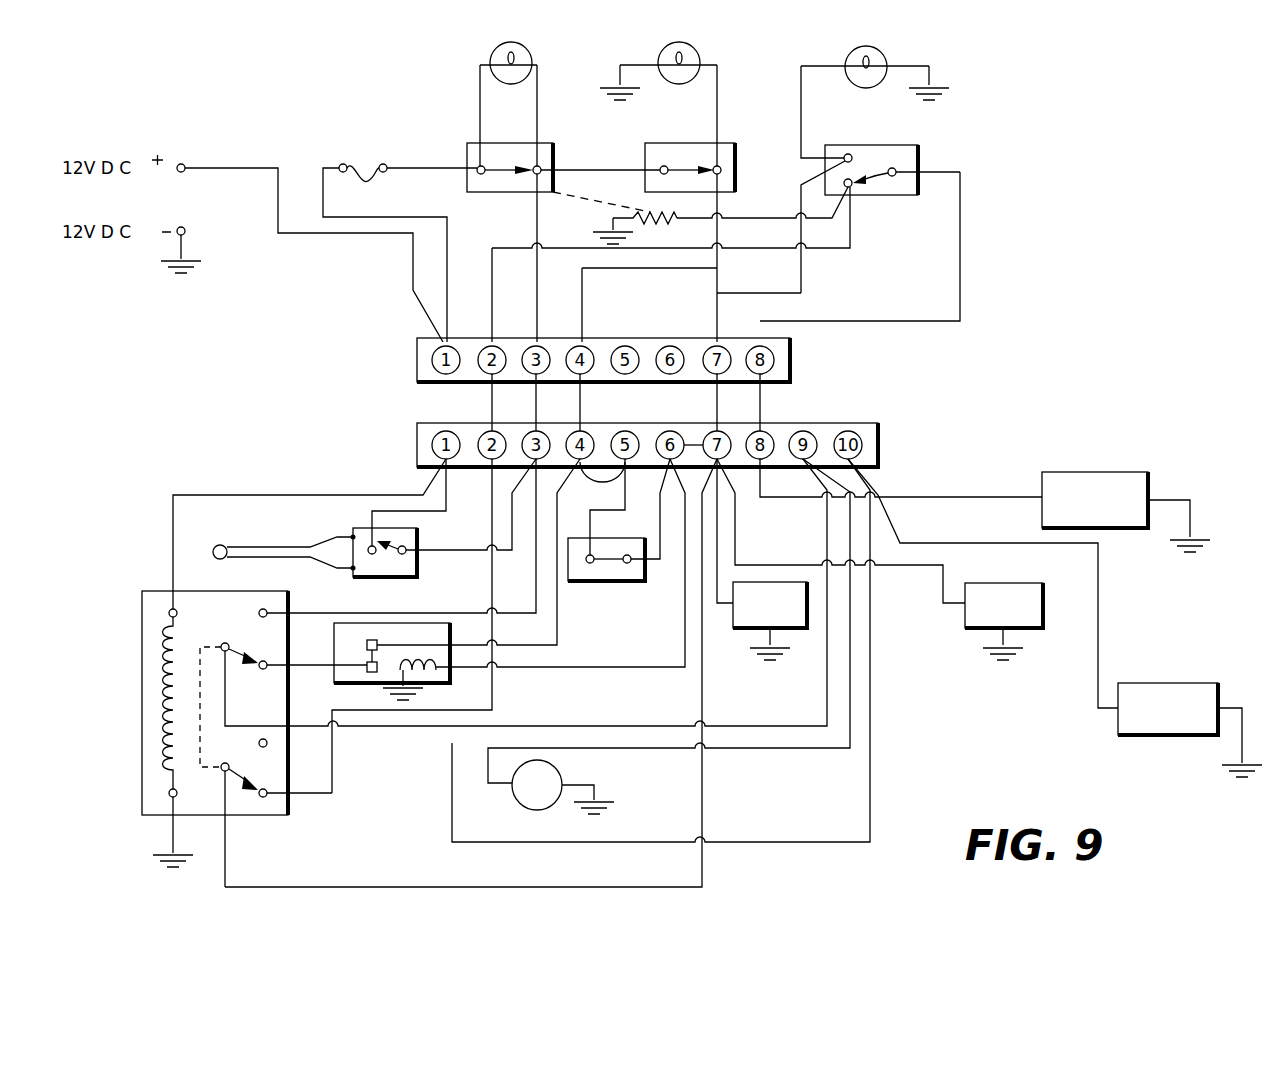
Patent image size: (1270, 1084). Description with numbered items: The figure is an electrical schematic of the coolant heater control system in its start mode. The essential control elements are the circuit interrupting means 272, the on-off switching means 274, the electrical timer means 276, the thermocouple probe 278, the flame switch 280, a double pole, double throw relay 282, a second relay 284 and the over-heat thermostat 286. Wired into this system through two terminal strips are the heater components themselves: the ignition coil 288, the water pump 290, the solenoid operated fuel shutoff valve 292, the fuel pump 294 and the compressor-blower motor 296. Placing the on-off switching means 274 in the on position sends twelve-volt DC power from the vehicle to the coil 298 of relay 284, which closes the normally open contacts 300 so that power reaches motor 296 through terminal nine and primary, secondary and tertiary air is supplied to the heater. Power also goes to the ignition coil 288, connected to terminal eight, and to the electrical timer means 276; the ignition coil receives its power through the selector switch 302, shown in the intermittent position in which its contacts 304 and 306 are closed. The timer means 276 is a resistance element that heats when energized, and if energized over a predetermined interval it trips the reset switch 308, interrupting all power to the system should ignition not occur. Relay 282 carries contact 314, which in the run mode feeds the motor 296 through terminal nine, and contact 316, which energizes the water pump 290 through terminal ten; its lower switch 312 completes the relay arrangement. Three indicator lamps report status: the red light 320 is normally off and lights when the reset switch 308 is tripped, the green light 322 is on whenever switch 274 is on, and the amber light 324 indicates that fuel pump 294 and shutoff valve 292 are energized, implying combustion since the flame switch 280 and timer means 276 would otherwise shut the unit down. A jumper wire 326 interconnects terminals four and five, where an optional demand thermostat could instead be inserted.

The circuit interrupting means 272 is at (470, 143).
The on-off switching means 274 is at (731, 143).
The electrical timer means 276 is at (652, 228).
The thermocouple probe 278 is at (213, 552).
The flame switch 280 is at (363, 528).
The relay 282 is at (142, 650).
The relay 284 is at (387, 699).
The over-heat thermostat 286 is at (645, 578).
The ignition coil 288 is at (1105, 472).
The water pump 290 is at (1188, 683).
The solenoid operated fuel shutoff valve 292 is at (972, 630).
The fuel pump 294 is at (745, 630).
The compressor-blower motor 296 is at (528, 808).
The coil 298 is at (432, 686).
The contacts 300 is at (367, 643).
The selector switch 302 is at (921, 160).
The contact 304 is at (880, 176).
The contact 306 is at (851, 196).
The reset switch 308 is at (500, 168).
The relay switch 312 is at (267, 797).
The contact 314 is at (222, 645).
The contact 316 is at (262, 739).
The red light 320 is at (490, 52).
The green light 322 is at (658, 52).
The amber light 324 is at (845, 55).
The jumper wire 326 is at (615, 478).